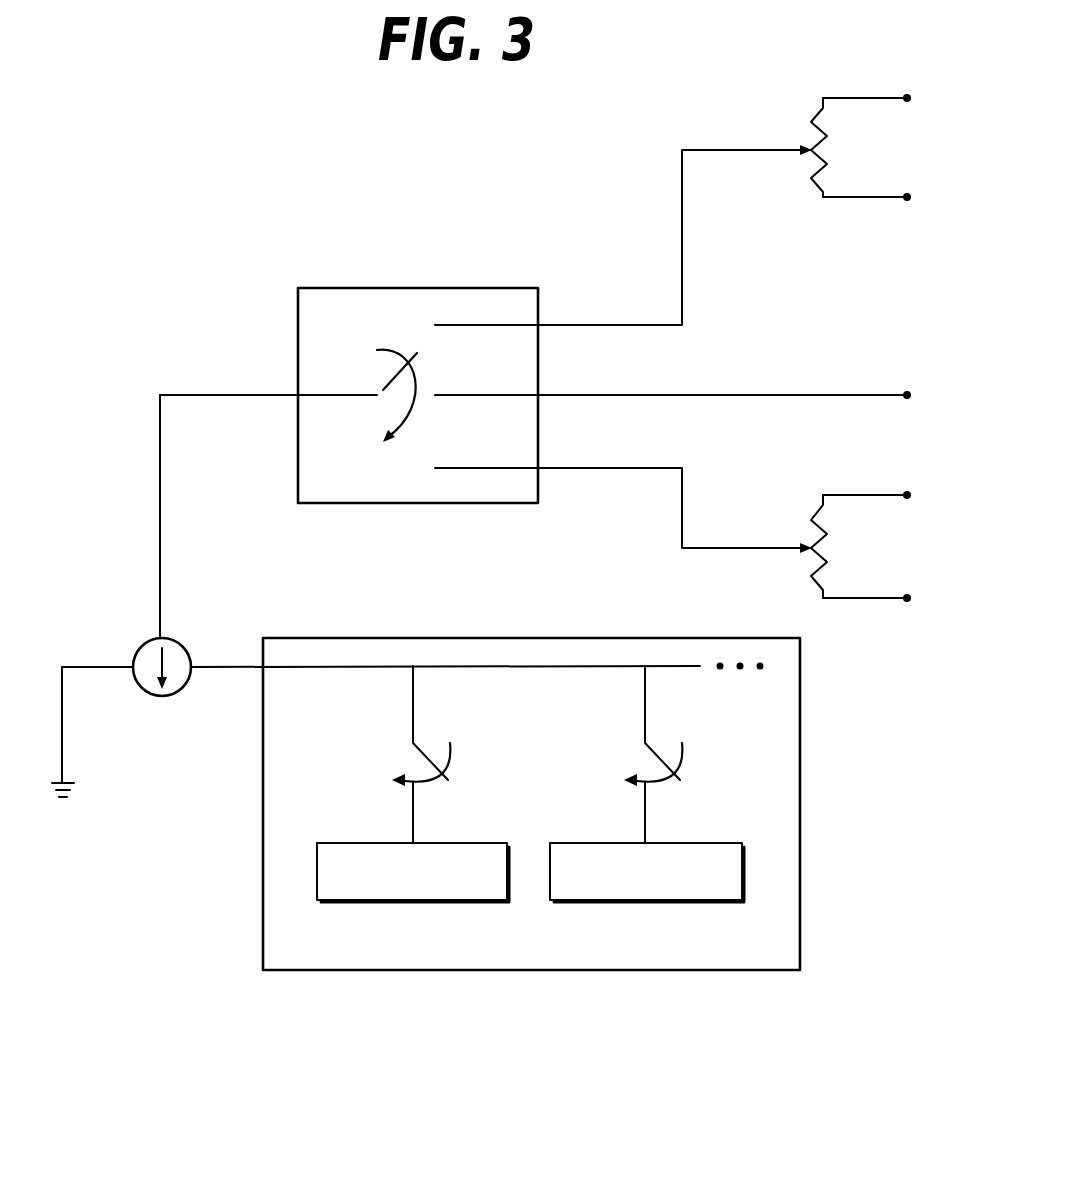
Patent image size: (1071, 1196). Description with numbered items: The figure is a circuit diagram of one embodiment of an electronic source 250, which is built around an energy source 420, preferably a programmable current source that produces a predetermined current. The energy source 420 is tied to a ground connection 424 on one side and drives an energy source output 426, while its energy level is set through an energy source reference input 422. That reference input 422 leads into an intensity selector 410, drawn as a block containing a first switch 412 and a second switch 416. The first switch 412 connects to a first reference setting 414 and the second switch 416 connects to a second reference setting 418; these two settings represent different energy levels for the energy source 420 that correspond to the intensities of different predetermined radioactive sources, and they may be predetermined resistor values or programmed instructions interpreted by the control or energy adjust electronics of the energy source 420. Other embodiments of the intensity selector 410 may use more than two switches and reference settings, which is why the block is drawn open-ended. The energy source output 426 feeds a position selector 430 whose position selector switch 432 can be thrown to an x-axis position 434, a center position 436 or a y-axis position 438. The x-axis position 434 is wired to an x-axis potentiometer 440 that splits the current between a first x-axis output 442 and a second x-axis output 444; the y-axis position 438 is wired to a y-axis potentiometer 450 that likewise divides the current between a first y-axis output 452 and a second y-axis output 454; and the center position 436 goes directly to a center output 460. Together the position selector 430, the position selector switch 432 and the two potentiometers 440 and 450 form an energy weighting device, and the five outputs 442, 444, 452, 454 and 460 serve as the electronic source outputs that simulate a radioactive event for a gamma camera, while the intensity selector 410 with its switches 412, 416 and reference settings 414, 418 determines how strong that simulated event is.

The electronic source 250 is at (160, 980).
The intensity selector 410 is at (802, 877).
The first switch 412 is at (413, 700).
The first reference setting 414 is at (458, 902).
The second switch 416 is at (645, 703).
The second reference setting 418 is at (688, 902).
The energy source 420 is at (170, 637).
The energy source reference input 422 is at (233, 665).
The ground connection 424 is at (65, 750).
The energy source output 426 is at (158, 492).
The position selector 430 is at (352, 288).
The position selector switch 432 is at (385, 388).
The x-axis position 434 is at (513, 325).
The center position 436 is at (515, 395).
The y-axis position 438 is at (515, 468).
The x-axis potentiometer 440 is at (811, 176).
The first x-axis output 442 is at (907, 98).
The second x-axis output 444 is at (907, 197).
The y-axis potentiometer 450 is at (811, 522).
The first y-axis output 452 is at (907, 495).
The second y-axis output 454 is at (907, 598).
The center output 460 is at (907, 394).